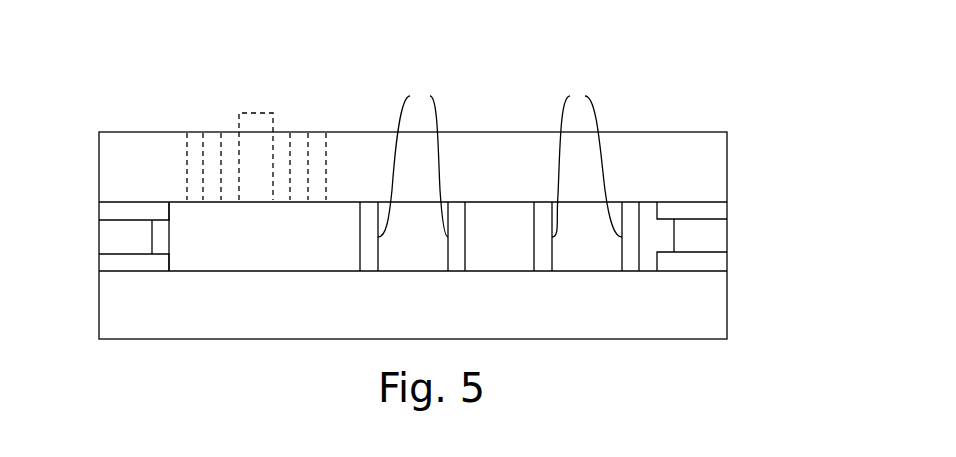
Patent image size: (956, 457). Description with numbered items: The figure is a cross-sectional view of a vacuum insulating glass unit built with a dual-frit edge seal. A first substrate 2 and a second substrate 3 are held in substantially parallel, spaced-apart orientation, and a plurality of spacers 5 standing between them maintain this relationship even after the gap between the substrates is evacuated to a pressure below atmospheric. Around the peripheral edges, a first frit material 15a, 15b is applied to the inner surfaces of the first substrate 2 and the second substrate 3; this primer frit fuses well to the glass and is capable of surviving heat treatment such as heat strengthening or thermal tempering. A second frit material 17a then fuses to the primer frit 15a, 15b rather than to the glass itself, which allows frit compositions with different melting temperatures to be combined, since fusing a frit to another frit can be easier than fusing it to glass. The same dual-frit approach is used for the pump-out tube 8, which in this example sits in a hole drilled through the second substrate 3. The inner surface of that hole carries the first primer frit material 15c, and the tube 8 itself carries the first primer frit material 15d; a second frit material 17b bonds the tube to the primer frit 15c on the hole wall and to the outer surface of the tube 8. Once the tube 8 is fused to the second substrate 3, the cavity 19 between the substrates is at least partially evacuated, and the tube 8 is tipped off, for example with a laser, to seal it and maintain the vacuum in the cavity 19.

The first substrate 2 is at (727, 305).
The second substrate 3 is at (727, 166).
The spacers 5 is at (500, 165).
The pump-out tube 8 is at (256, 113).
The first frit material 15a is at (99, 258).
The first frit material 15b is at (99, 213).
The first primer frit material 15c is at (192, 132).
The first primer frit material 15d is at (229, 132).
The second frit material 17a is at (99, 238).
The second frit material 17b is at (212, 132).
The cavity 19 is at (267, 244).